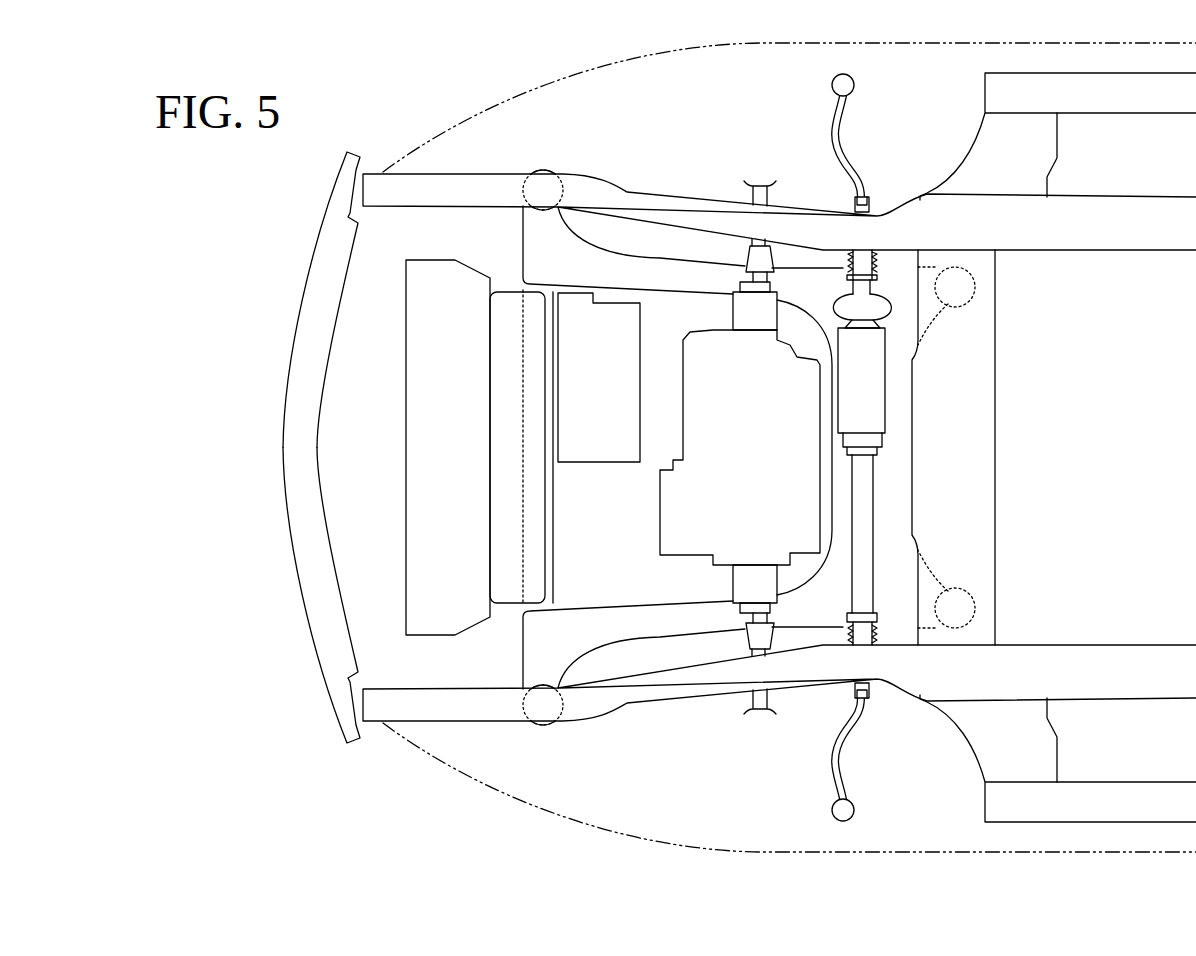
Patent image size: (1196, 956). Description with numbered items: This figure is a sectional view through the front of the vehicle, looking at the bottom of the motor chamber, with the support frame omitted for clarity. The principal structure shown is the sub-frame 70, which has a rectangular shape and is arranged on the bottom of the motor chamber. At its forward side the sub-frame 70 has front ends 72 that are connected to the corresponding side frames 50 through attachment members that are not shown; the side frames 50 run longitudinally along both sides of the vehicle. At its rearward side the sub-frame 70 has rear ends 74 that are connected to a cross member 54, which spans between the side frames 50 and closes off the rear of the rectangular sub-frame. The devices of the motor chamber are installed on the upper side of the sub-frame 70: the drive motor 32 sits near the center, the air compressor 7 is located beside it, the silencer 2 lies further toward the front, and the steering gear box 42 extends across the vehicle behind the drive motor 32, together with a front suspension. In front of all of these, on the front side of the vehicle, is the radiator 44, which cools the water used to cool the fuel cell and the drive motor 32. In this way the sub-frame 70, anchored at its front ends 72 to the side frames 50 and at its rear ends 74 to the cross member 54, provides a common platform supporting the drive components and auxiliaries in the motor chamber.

The silencer 2 is at (498, 464).
The air compressor 7 is at (591, 394).
The drive motor 32 is at (733, 464).
The steering gear box 42 is at (845, 399).
The radiator 44 is at (430, 464).
The side frame 50 is at (494, 183).
The cross member 54 is at (977, 440).
The sub-frame 70 is at (648, 256).
The front end 72 is at (543, 172).
The rear end 74 is at (975, 287).